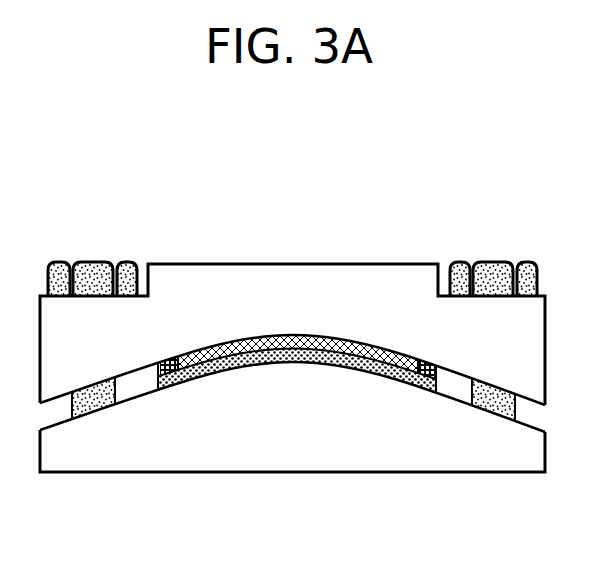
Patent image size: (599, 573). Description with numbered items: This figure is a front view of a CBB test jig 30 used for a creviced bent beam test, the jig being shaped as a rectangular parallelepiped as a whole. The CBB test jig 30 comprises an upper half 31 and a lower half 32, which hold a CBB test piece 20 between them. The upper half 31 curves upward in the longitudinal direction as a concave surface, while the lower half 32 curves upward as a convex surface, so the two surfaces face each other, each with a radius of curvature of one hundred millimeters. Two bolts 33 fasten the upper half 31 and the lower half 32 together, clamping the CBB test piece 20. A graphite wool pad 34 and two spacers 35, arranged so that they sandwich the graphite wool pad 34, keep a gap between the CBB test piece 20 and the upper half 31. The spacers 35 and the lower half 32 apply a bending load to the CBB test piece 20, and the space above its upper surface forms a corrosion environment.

The CBB test jig 30 is at (479, 191).
The upper half 31 is at (290, 263).
The lower half 32 is at (132, 454).
The bolts 33 is at (94, 262).
The graphite wool pad 34 is at (348, 343).
The spacers 35 is at (171, 360).
The CBB test piece 20 is at (300, 363).